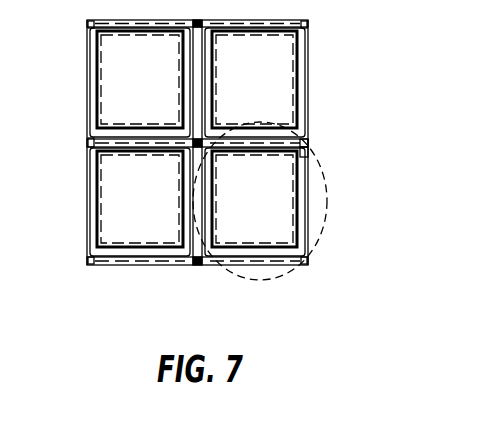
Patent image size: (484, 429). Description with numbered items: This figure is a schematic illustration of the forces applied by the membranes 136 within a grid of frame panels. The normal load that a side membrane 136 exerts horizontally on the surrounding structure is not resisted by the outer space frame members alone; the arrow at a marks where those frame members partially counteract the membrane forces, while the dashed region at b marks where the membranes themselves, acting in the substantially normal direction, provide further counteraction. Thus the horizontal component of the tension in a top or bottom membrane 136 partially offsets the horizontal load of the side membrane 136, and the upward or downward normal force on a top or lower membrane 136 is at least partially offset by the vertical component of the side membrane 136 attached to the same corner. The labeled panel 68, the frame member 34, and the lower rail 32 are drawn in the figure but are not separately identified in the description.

The membrane 136 is at (315, 150).
The frame member 34 is at (305, 190).
The panel 68 is at (272, 208).
The bottom frame rail 32 is at (258, 265).
The frame counteraction location a is at (287, 254).
The membrane counteraction location b is at (287, 279).